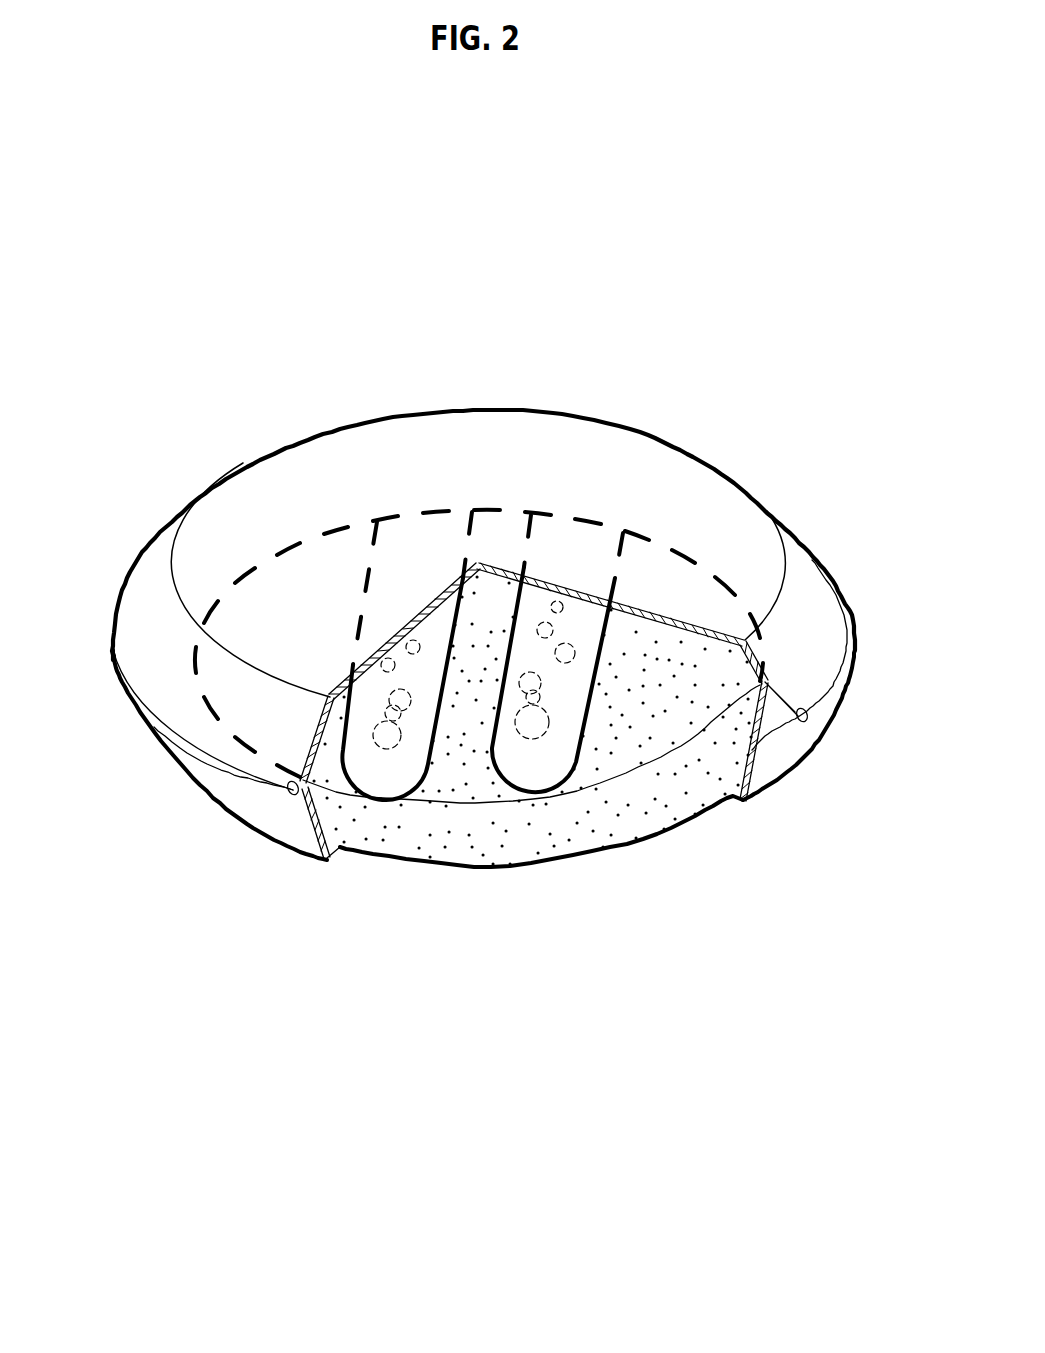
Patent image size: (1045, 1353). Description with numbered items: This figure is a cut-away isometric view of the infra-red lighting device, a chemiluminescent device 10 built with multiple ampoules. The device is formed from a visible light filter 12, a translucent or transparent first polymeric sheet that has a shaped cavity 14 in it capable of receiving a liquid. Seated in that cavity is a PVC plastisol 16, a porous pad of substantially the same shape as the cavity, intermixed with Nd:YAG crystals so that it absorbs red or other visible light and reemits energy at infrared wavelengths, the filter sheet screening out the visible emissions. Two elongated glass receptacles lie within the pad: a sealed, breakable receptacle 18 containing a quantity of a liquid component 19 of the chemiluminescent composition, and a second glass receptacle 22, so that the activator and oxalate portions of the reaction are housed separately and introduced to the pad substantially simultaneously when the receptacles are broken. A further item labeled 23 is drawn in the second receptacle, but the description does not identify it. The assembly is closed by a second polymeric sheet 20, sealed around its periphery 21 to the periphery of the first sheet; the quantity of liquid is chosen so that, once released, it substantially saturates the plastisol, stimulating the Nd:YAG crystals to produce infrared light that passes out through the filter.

The chemiluminescent device 10 is at (507, 1112).
The visible light filter 12 is at (765, 682).
The shaped cavity 14 is at (777, 718).
The PVC plastisol 16 is at (657, 807).
The sealed, breakable receptacle 18 is at (416, 795).
The liquid component 19 is at (382, 747).
The second polymeric sheet 20 is at (775, 773).
The periphery 21 is at (288, 792).
The glass receptacle 22 is at (512, 797).
The contents in second channel 23 is at (552, 755).